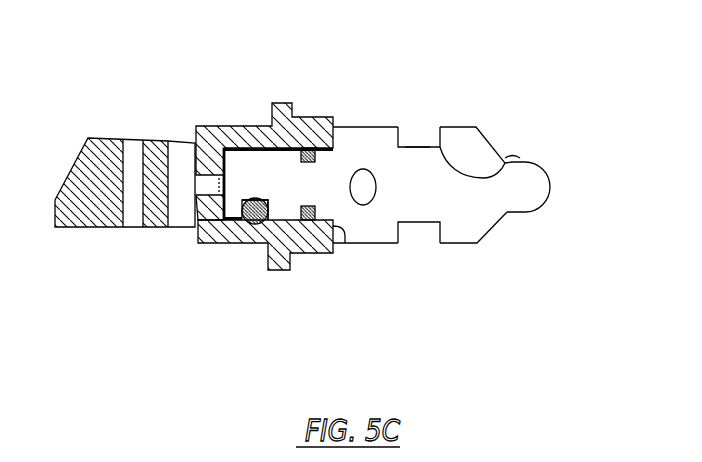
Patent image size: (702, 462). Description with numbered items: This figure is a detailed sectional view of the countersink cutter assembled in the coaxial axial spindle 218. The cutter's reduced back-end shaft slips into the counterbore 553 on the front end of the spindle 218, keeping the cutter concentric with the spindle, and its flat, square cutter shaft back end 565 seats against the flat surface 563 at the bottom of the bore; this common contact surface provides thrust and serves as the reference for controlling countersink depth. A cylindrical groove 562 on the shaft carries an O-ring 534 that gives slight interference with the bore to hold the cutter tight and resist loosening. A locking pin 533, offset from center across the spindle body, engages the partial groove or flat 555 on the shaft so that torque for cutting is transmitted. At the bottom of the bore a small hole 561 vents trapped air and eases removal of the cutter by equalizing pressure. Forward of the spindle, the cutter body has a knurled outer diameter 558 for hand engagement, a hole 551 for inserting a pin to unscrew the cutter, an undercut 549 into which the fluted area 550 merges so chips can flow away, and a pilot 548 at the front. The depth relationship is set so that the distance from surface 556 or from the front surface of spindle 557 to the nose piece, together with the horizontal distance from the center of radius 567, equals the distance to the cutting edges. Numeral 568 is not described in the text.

The axial spindle 218 is at (102, 137).
The locking pin 533 is at (250, 224).
The O-ring 534 is at (307, 221).
The pilot 548 is at (522, 212).
The undercut 549 is at (415, 222).
The fluted area 550 is at (479, 150).
The hole 551 is at (363, 206).
The counterbore 553 is at (227, 178).
The flat 555 is at (180, 226).
The surface 556 is at (343, 245).
The front surface of spindle 557 is at (333, 125).
The knurled outer body diameter 558 is at (390, 120).
The small hole 561 is at (205, 180).
The cylindrical groove 562 is at (305, 193).
The flat surface in spindle bore 563 is at (200, 228).
The cutter shaft back end 565 is at (230, 173).
The center of radius 567 is at (513, 150).
The notch floor 568 is at (417, 137).